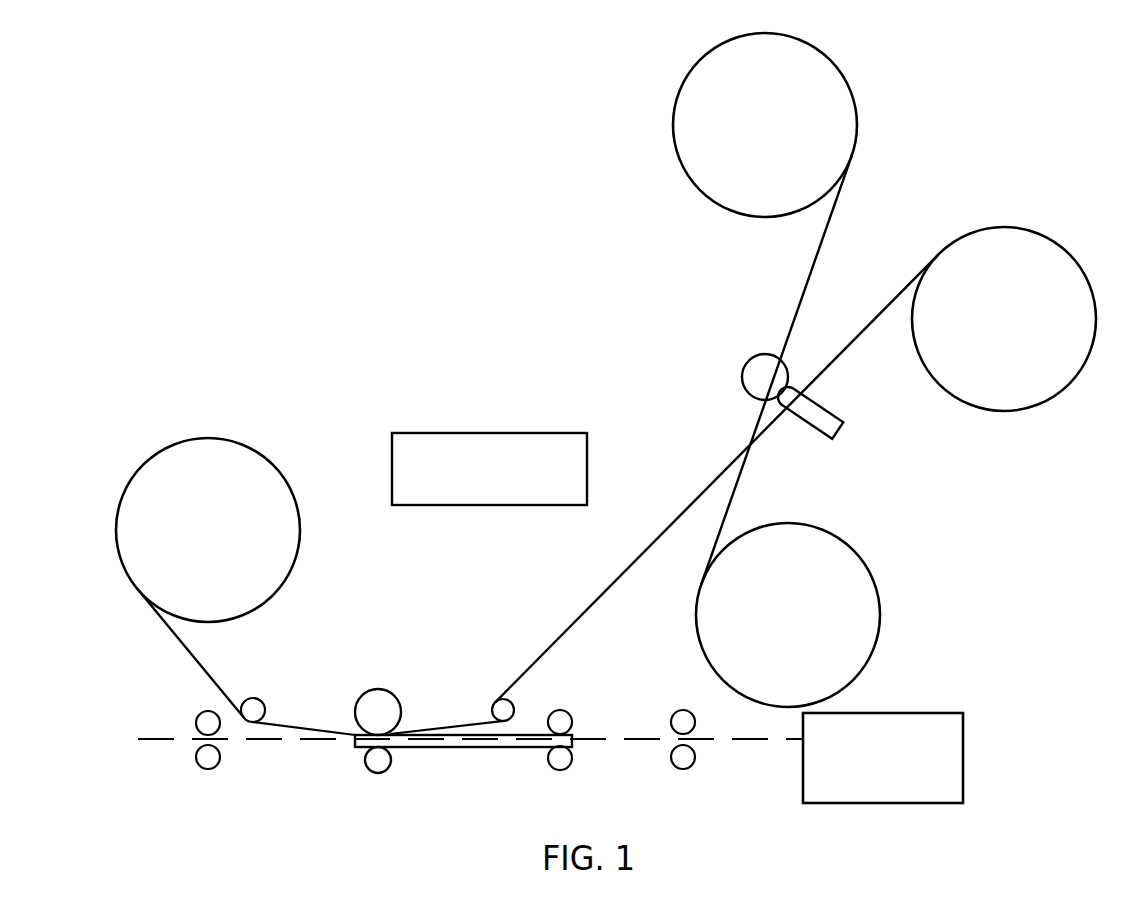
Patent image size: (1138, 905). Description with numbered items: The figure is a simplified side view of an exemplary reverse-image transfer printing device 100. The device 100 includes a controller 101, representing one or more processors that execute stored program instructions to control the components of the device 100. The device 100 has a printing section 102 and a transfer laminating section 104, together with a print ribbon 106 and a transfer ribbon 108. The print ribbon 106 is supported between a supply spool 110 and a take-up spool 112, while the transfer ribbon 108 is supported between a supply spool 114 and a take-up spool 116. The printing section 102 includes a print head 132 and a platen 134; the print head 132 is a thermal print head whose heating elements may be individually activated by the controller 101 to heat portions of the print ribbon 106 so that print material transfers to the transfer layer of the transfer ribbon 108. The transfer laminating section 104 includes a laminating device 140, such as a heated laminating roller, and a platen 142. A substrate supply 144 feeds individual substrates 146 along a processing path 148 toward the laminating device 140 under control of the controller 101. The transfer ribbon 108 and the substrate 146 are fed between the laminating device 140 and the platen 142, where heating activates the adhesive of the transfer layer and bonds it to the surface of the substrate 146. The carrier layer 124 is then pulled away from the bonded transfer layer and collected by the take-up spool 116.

The reverse-image transfer printing device 100 is at (278, 220).
The controller 101 is at (427, 433).
The printing section 102 is at (910, 463).
The transfer laminating section 104 is at (441, 600).
The print ribbon 106 is at (847, 338).
The transfer ribbon 108 is at (816, 277).
The supply spool 110 is at (998, 404).
The take-up spool 112 is at (855, 566).
The supply spool 114 is at (841, 90).
The take-up spool 116 is at (178, 452).
The carrier layer 124 is at (197, 661).
The print head 132 is at (833, 438).
The platen 134 is at (748, 372).
The laminating device 140 is at (384, 692).
The platen 142 is at (383, 773).
The substrate supply 144 is at (920, 713).
The substrate 146 is at (488, 748).
The processing path 148 is at (152, 739).